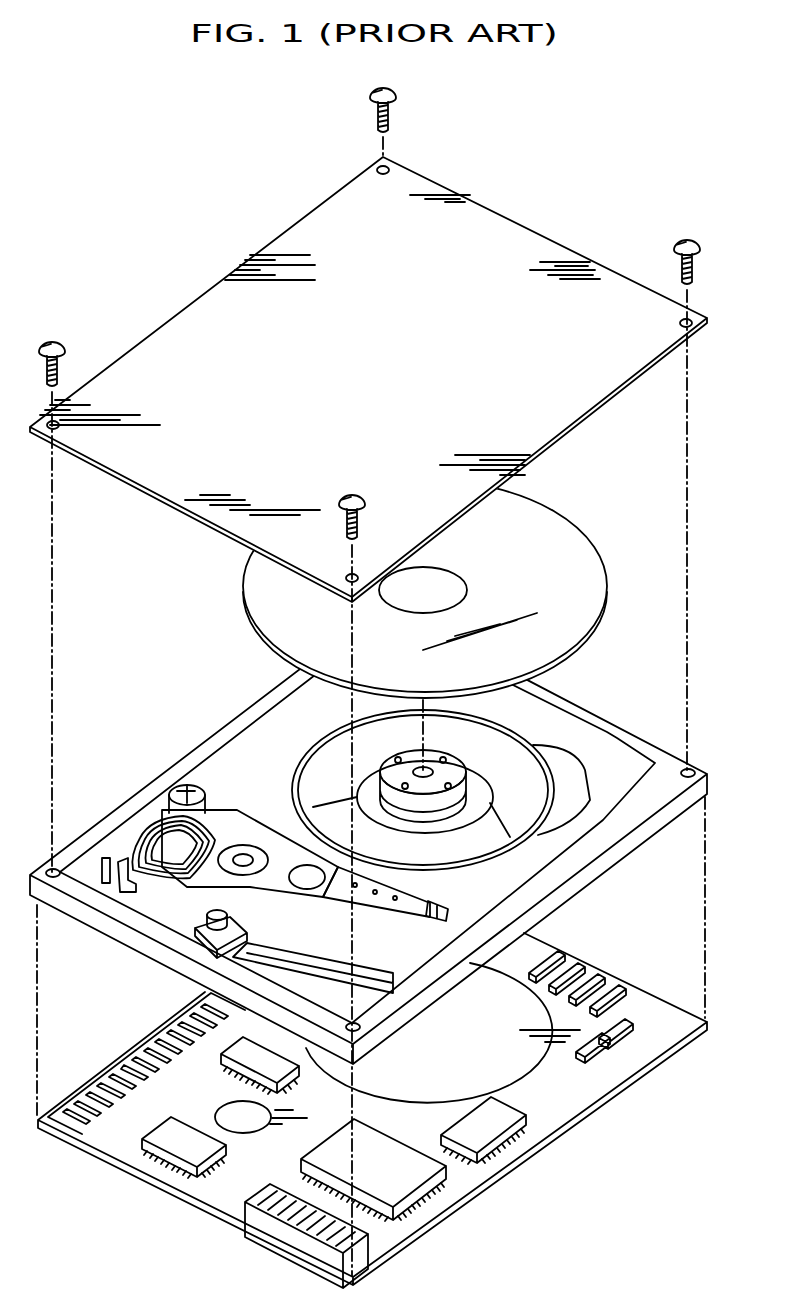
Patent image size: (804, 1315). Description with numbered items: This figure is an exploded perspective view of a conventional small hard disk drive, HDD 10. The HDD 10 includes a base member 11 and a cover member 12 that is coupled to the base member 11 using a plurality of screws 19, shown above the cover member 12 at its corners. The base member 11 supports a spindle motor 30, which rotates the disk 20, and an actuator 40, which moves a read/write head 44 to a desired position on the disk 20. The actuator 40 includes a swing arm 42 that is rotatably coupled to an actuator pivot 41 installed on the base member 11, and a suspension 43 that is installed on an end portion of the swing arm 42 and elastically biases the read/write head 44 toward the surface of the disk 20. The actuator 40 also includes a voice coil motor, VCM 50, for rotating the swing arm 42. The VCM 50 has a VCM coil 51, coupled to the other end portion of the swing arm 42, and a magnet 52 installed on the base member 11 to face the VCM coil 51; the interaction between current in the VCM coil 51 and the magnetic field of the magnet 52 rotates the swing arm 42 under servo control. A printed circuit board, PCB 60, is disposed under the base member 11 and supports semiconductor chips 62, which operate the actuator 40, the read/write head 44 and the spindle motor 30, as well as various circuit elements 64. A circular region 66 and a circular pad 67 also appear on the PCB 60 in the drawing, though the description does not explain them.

The HDD 10 is at (665, 562).
The base member 11 is at (683, 760).
The cover member 12 is at (517, 243).
The screws 19 is at (66, 347).
The disk 20 is at (541, 505).
The spindle motor 30 is at (385, 755).
The actuator 40 is at (280, 851).
The actuator pivot 41 is at (242, 855).
The swing arm 42 is at (280, 848).
The suspension 43 is at (350, 892).
The read/write head 44 is at (430, 920).
The voice coil motor 50 is at (140, 810).
The VCM coil 51 is at (157, 827).
The magnet 52 is at (106, 838).
The printed circuit board 60 is at (448, 1195).
The semiconductor chips 62 is at (345, 1153).
The circuit elements 64 is at (630, 1067).
The motor mounting area 66 is at (497, 1058).
The circular pad 67 is at (237, 1117).